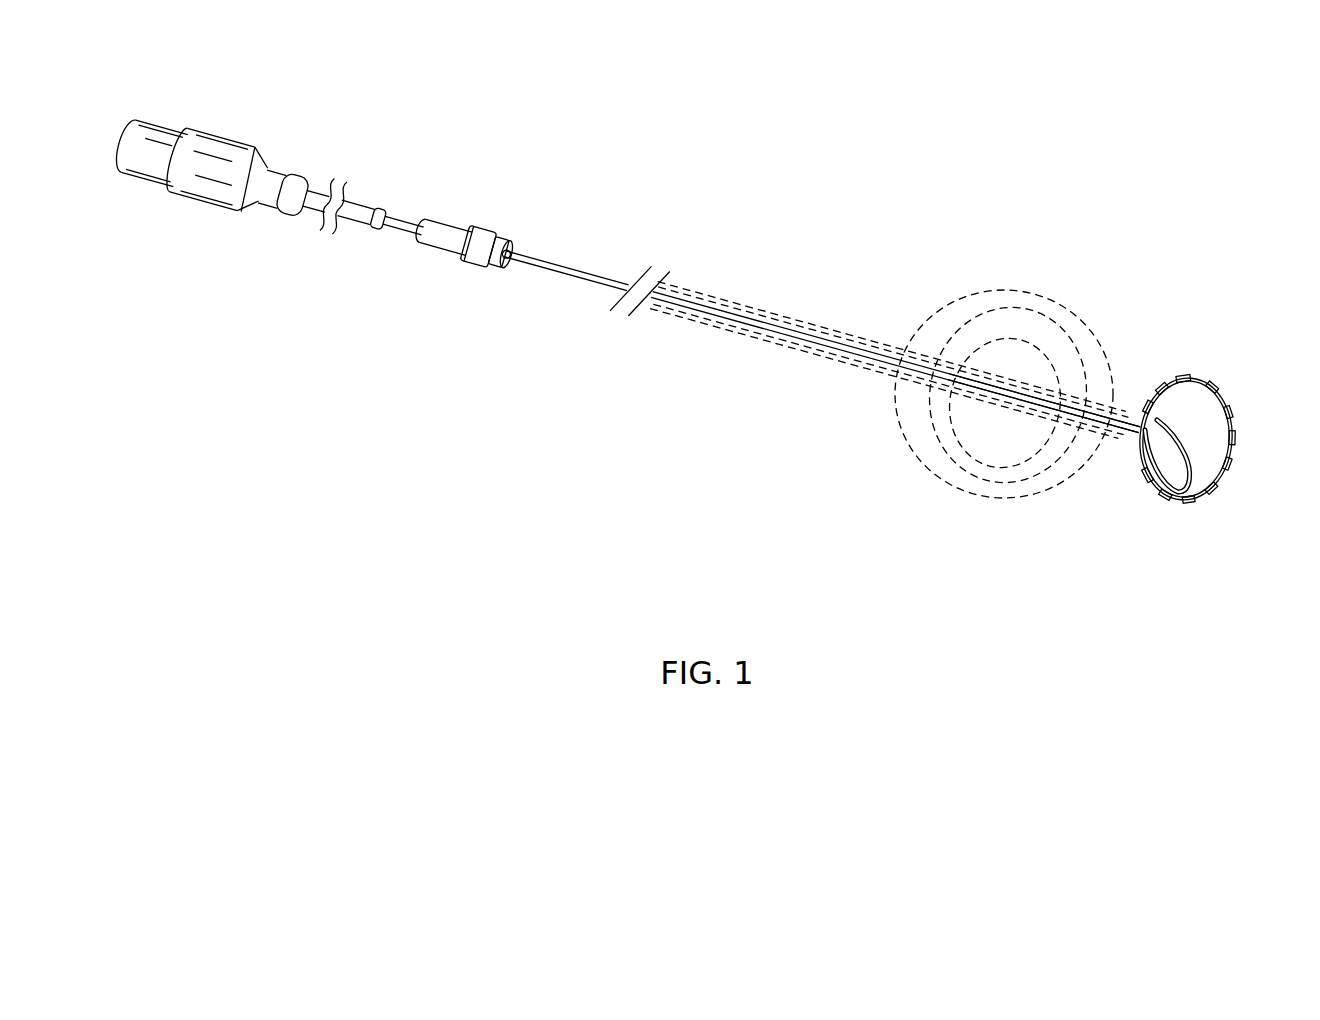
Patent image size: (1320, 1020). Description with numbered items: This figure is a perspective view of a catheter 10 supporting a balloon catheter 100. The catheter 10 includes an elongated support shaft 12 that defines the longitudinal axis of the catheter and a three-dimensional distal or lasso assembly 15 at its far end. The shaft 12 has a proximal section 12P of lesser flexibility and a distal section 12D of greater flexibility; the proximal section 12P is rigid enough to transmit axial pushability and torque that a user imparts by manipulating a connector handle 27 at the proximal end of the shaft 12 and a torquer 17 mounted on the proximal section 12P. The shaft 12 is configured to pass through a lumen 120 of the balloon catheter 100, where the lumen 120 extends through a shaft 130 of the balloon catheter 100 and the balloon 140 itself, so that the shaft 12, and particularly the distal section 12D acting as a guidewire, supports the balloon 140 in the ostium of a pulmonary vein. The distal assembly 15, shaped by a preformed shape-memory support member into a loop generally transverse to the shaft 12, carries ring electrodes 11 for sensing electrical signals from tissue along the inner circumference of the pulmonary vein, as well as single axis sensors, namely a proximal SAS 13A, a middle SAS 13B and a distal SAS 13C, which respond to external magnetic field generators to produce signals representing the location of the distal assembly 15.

The catheter 10 is at (597, 83).
The connector handle 27 is at (256, 150).
The torquer 17 is at (462, 227).
The elongated support shaft 12 is at (663, 247).
The proximal section 12P is at (598, 284).
The distal section 12D is at (983, 388).
The shaft of the balloon catheter 130 is at (785, 317).
The lumen 120 is at (823, 354).
The balloon catheter 100 is at (937, 266).
The balloon 140 is at (1033, 293).
The ring electrodes 11 is at (1220, 397).
The distal assembly 15 is at (1207, 500).
The proximal SAS 13A is at (1162, 487).
The middle SAS 13B is at (1233, 460).
The distal SAS 13C is at (1184, 378).